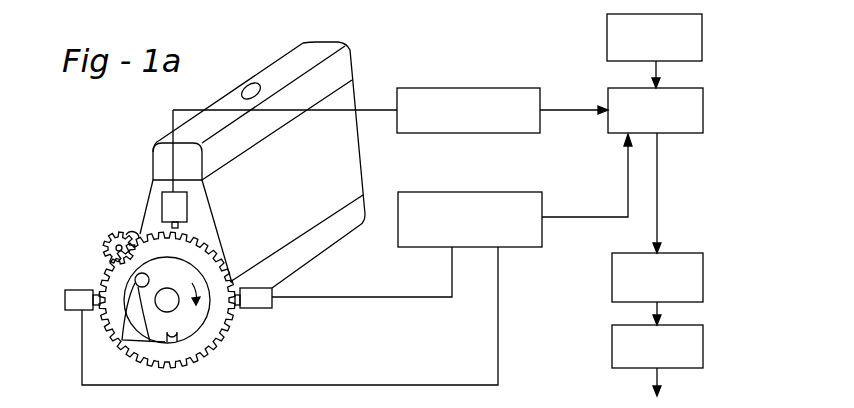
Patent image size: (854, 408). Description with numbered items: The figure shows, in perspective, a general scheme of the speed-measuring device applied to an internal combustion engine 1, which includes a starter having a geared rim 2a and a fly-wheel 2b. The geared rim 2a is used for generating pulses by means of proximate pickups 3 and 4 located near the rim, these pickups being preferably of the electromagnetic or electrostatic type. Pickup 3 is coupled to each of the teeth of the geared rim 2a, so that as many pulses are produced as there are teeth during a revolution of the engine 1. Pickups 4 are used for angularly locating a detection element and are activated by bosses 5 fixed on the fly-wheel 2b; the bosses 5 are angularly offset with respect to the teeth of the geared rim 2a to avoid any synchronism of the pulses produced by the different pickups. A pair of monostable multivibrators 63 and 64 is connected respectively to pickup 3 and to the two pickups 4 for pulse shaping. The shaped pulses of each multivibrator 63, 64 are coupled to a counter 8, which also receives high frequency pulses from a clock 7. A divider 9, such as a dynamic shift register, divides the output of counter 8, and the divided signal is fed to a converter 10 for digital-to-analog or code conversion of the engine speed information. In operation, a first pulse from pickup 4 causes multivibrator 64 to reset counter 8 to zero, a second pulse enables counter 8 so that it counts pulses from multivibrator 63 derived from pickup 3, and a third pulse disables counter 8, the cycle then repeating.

The engine 1 is at (227, 100).
The geared rim 2a is at (132, 244).
The fly-wheel 2b is at (193, 325).
The pickup 3 is at (181, 206).
The pickups 4 is at (83, 292).
The bosses 5 is at (130, 325).
The monostable multivibrator 63 is at (400, 129).
The monostable multivibrator 64 is at (400, 236).
The clock 7 is at (698, 33).
The counter 8 is at (705, 101).
The divider 9 is at (612, 268).
The converter 10 is at (612, 335).